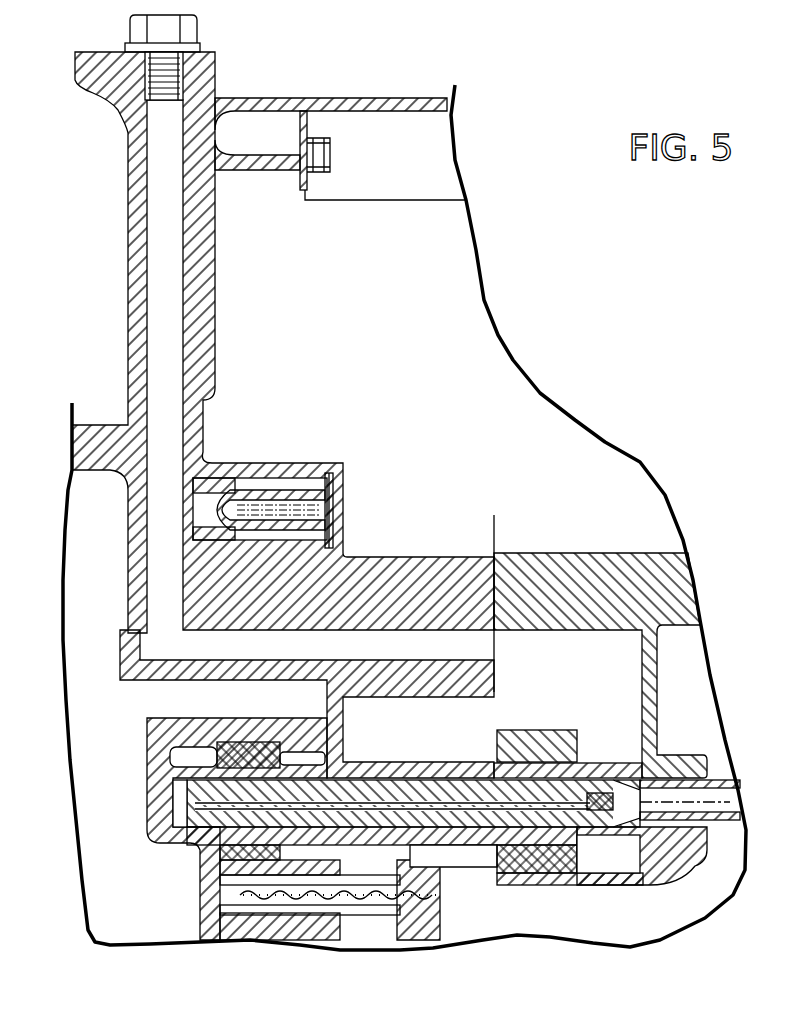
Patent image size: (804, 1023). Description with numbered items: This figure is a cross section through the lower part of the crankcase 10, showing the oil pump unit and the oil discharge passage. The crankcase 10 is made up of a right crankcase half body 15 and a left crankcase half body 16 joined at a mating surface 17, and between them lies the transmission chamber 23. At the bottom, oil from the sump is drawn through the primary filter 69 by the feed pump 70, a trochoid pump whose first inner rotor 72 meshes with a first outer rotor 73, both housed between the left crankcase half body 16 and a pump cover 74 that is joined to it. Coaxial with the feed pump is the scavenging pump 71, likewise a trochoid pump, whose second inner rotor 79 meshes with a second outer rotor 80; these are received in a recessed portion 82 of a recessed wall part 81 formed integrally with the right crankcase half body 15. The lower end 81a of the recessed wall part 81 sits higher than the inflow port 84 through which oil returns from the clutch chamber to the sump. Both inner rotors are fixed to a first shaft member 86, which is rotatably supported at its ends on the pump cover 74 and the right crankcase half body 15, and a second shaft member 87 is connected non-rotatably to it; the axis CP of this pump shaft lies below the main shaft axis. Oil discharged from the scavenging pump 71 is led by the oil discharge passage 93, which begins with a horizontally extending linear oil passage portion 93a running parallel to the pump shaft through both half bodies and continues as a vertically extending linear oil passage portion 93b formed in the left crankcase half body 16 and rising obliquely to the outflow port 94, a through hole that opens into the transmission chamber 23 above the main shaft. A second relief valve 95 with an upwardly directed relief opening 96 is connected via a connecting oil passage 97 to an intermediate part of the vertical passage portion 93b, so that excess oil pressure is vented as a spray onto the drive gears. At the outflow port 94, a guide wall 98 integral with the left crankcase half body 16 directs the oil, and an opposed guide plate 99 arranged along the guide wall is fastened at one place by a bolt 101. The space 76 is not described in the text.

The crankcase 10 is at (414, 86).
The right crankcase half body 15 is at (636, 562).
The left crankcase half body 16 is at (110, 447).
The mating surface 17 is at (498, 588).
The transmission chamber 23 is at (458, 452).
The primary filter 69 is at (368, 905).
The feed pump 70 is at (192, 865).
The scavenging pump 71 is at (528, 880).
The first inner rotor 72 is at (212, 812).
The first outer rotor 73 is at (245, 752).
The pump cover 74 is at (153, 833).
The space 76 is at (114, 725).
The second inner rotor 79 is at (510, 882).
The second outer rotor 80 is at (533, 732).
The recessed wall part 81 is at (584, 800).
The lower end of the recessed wall part 81a is at (615, 884).
The recessed portion 82 is at (552, 862).
The inflow port 84 is at (648, 915).
The first shaft member 86 is at (461, 786).
The second shaft member 87 is at (722, 780).
The oil discharge passage 93 is at (382, 638).
The horizontally extending linear oil passage portion 93a is at (440, 620).
The vertically extending linear oil passage portion 93b is at (148, 316).
The outflow port 94 is at (188, 137).
The second relief valve 95 is at (279, 486).
The relief opening 96 is at (331, 470).
The connecting oil passage 97 is at (188, 508).
The guide wall 98 is at (257, 163).
The opposed guide plate 99 is at (328, 112).
The bolt 101 is at (323, 155).
The axis of the pump shaft CP is at (415, 797).